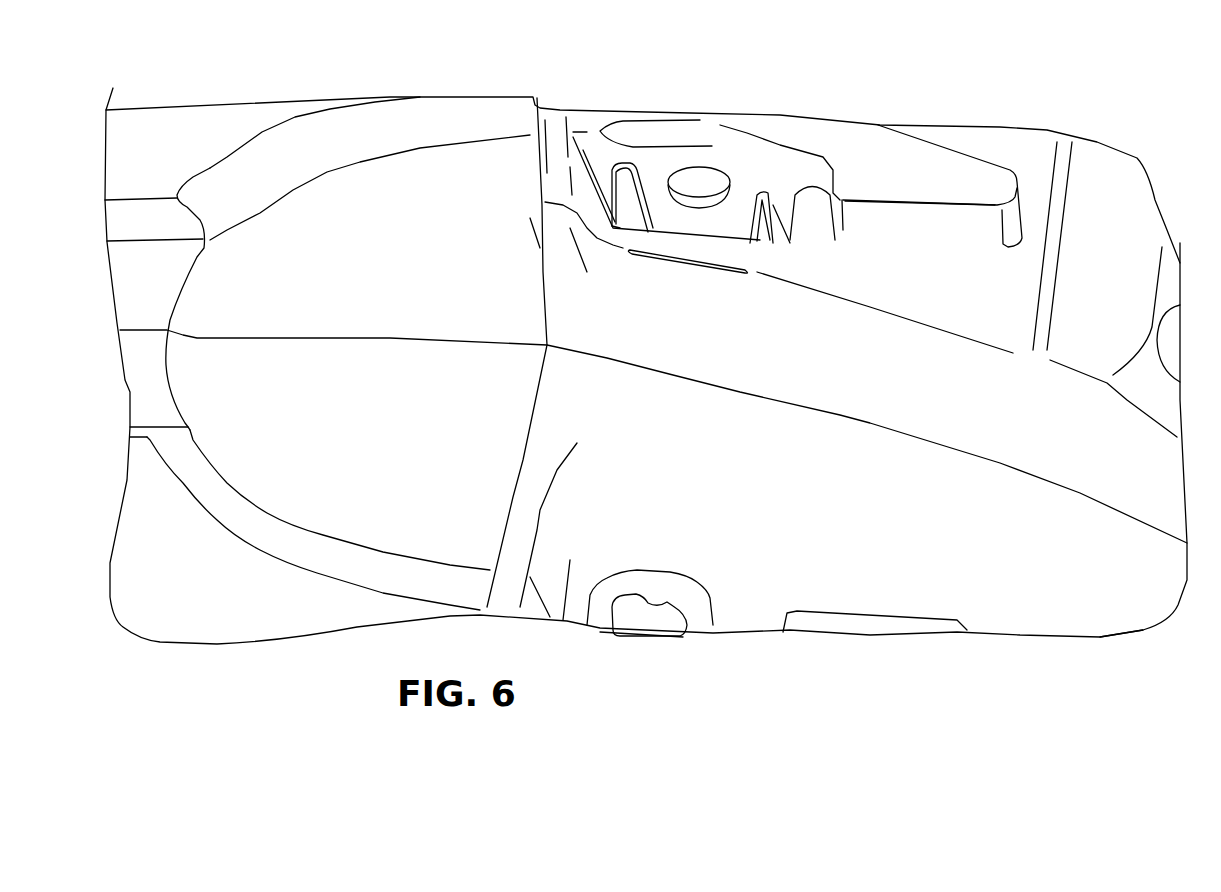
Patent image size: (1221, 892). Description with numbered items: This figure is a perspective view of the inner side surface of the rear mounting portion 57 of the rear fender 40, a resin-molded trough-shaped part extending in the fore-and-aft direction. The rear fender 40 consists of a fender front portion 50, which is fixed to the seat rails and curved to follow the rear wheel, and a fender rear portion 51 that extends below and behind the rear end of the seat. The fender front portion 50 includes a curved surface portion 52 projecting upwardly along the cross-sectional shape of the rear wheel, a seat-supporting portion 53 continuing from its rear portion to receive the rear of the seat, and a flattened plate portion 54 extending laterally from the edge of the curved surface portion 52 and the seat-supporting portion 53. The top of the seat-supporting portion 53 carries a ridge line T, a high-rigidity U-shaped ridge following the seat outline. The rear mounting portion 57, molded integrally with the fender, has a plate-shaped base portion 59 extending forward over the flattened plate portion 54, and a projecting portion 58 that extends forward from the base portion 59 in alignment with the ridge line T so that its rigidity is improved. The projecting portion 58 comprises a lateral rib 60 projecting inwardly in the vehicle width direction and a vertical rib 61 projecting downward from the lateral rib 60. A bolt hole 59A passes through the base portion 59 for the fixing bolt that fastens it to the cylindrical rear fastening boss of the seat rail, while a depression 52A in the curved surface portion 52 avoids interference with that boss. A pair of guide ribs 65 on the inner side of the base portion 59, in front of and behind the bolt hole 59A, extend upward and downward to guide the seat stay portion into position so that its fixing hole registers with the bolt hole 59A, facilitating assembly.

The rear fender 40 is at (1137, 608).
The fender front portion 50 is at (1090, 592).
The fender rear portion 51 is at (139, 133).
The ridge line T is at (210, 168).
The curved surface portion 52 is at (1013, 553).
The depression 52A is at (697, 262).
The seat-supporting portion 53 is at (360, 218).
The flattened plate portion 54 is at (1040, 150).
The rear mounting portion 57 is at (688, 112).
The projecting portion 58 is at (787, 113).
The base portion 59 is at (697, 173).
The bolt hole 59A is at (699, 187).
The lateral rib 60 is at (945, 165).
The vertical rib 61 is at (950, 205).
The guide rib 65 is at (630, 218).